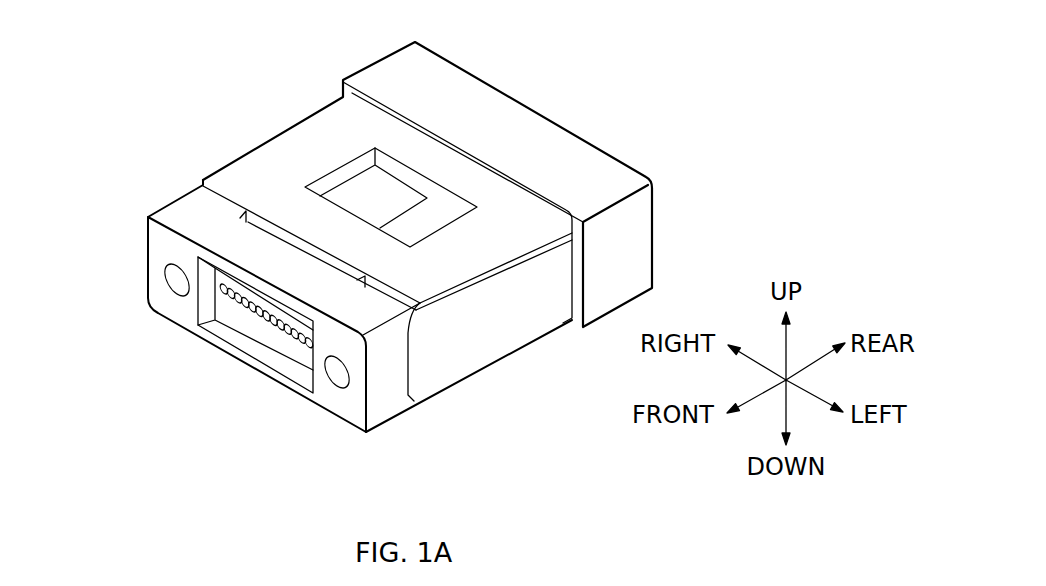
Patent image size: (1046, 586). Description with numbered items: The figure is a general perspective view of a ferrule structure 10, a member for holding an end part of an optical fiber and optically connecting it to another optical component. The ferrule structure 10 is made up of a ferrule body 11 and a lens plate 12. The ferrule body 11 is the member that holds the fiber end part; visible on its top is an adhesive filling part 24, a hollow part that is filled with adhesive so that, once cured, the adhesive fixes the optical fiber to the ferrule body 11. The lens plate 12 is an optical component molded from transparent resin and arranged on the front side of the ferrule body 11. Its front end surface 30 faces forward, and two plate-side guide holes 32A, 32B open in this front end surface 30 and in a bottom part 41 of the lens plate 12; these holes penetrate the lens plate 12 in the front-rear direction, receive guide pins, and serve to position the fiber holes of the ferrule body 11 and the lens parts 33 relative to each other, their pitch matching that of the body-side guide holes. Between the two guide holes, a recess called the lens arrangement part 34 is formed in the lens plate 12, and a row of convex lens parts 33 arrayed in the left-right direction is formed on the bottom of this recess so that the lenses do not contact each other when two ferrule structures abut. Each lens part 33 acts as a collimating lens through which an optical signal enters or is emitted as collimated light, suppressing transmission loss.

The ferrule structure 10 is at (190, 92).
The ferrule body 11 is at (657, 290).
The lens plate 12 is at (440, 420).
The adhesive filling part 24 is at (361, 192).
The front end surface 30 is at (156, 245).
The plate-side guide hole 32A is at (178, 283).
The plate-side guide hole 32B is at (337, 373).
The lens parts 33 is at (288, 323).
The lens arrangement part 34 is at (232, 334).
The bottom part 41 is at (297, 248).